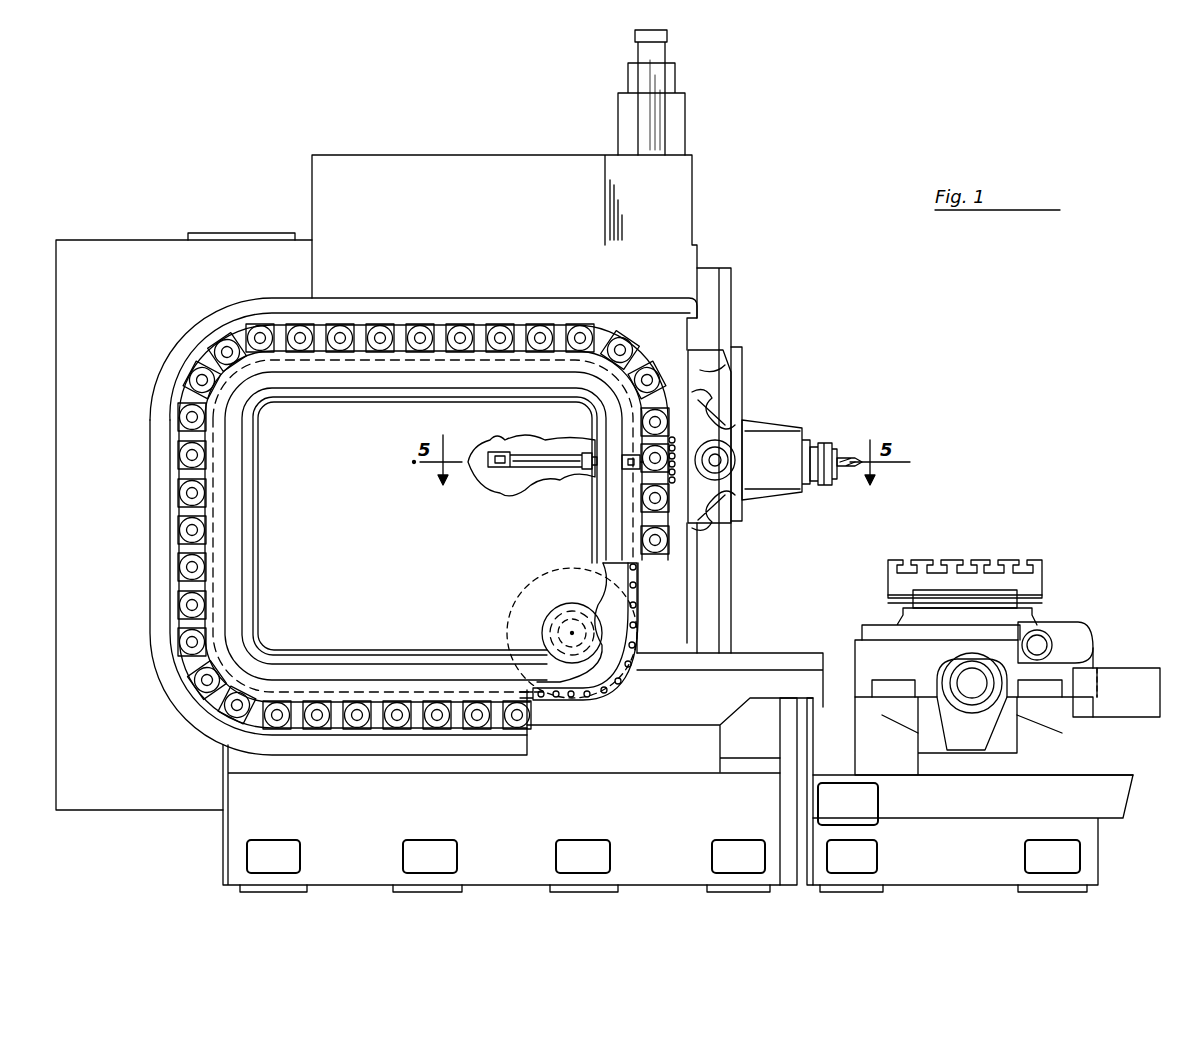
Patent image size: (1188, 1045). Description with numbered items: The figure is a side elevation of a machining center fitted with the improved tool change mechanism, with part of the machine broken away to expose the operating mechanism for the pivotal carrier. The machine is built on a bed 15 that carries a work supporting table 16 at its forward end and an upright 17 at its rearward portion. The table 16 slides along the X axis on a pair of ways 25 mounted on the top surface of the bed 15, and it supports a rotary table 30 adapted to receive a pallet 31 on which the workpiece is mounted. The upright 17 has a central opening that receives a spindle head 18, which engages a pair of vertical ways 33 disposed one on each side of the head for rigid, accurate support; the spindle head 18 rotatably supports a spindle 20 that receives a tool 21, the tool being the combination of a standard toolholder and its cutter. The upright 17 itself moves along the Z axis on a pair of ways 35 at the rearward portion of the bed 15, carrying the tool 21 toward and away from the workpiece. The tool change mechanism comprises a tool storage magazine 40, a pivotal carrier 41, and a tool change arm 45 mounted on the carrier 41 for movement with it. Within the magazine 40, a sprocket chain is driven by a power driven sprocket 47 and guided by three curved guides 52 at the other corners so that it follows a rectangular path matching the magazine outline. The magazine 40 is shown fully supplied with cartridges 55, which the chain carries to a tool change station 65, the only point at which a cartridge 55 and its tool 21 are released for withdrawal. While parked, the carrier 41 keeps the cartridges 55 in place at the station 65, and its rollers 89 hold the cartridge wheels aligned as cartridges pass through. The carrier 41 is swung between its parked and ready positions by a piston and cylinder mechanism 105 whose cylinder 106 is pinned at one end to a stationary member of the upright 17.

The bed 15 is at (1082, 830).
The work supporting table 16 is at (1093, 662).
The upright 17 is at (645, 323).
The spindle head 18 is at (767, 432).
The spindle 20 is at (838, 441).
The tool 21 is at (845, 438).
The ways 25 is at (893, 678).
The rotary table 30 is at (1040, 602).
The pallet 31 is at (1040, 590).
The vertical ways 33 is at (725, 302).
The ways 35 is at (745, 657).
The tool storage magazine 40 is at (178, 328).
The pivotal carrier 41 is at (757, 359).
The tool change arm 45 is at (749, 518).
The power driven sprocket 47 is at (597, 673).
The curved guides 52 is at (235, 380).
The cartridges 55 is at (346, 325).
The tool change station 65 is at (632, 470).
The rollers 89 is at (686, 469).
The piston and cylinder mechanism 105 is at (540, 435).
The cylinder 106 is at (535, 482).